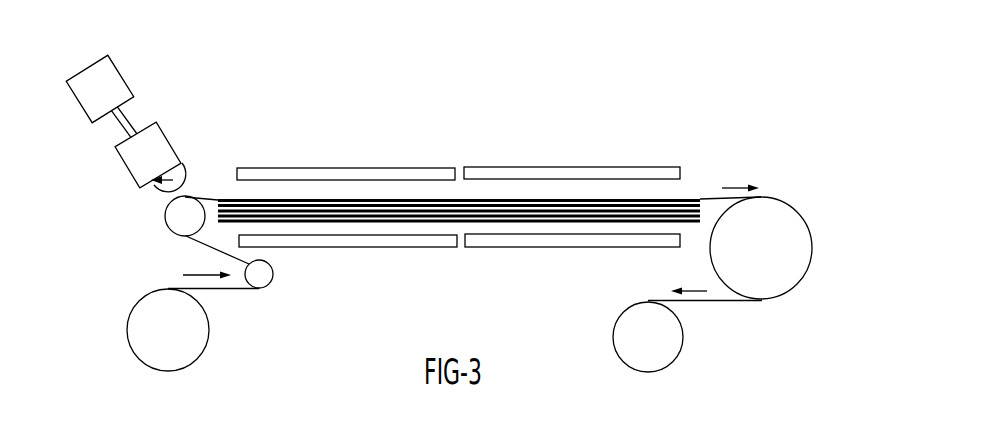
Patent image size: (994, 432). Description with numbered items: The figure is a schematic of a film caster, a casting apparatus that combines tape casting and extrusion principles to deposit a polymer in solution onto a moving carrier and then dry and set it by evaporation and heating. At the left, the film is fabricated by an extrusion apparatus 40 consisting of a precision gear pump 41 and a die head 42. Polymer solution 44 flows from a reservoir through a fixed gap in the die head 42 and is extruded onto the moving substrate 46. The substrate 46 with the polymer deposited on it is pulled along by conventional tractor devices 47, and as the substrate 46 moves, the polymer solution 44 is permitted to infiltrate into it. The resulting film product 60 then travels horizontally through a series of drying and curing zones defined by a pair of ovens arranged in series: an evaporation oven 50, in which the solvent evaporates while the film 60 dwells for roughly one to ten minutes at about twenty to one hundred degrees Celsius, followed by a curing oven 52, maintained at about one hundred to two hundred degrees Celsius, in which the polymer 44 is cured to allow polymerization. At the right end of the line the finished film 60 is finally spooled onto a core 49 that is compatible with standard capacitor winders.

The extrusion apparatus 40 is at (180, 89).
The precision gear pump 41 is at (112, 83).
The die head 42 is at (151, 180).
The polymer solution 44 is at (180, 195).
The moving substrate 46 is at (222, 201).
The tractor devices 47 is at (150, 332).
The core 49 is at (673, 330).
The evaporation oven 50 is at (350, 234).
The curing oven 52 is at (548, 233).
The film product 60 is at (713, 195).